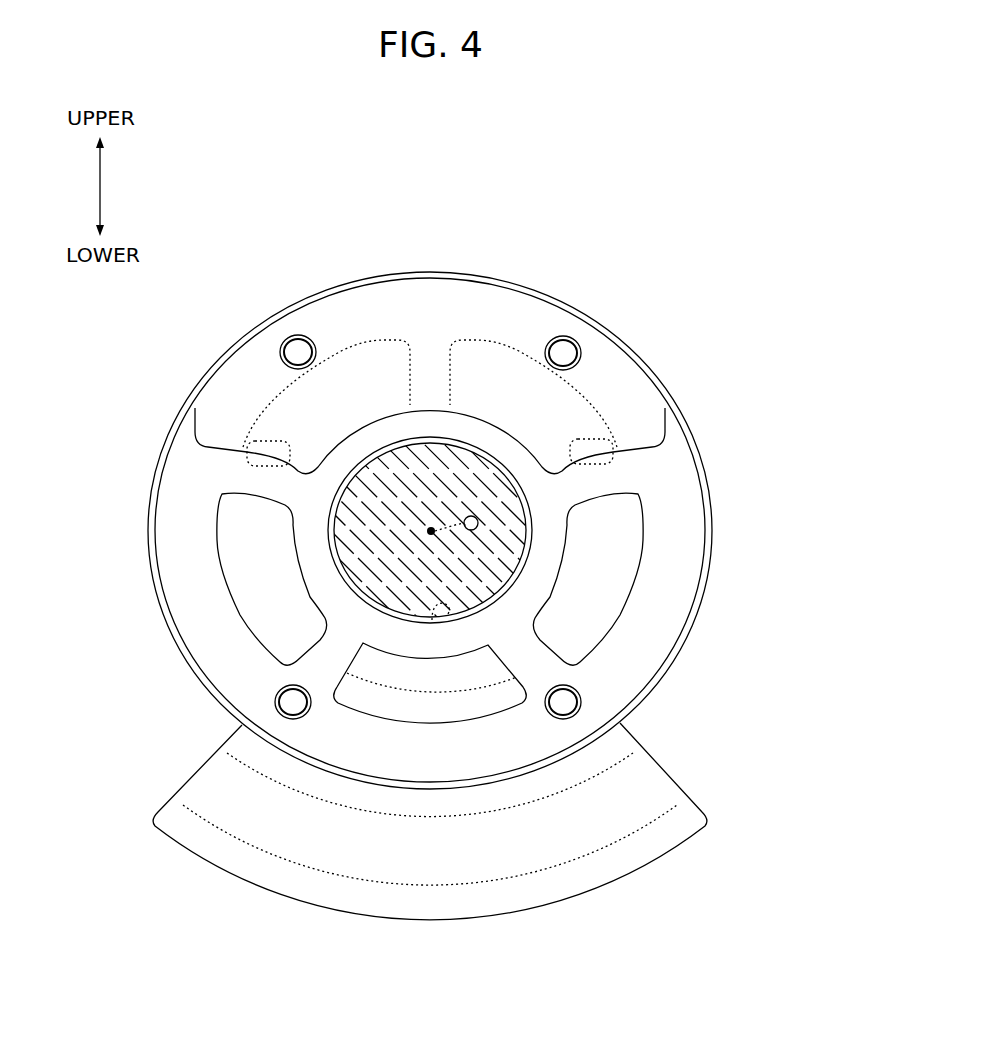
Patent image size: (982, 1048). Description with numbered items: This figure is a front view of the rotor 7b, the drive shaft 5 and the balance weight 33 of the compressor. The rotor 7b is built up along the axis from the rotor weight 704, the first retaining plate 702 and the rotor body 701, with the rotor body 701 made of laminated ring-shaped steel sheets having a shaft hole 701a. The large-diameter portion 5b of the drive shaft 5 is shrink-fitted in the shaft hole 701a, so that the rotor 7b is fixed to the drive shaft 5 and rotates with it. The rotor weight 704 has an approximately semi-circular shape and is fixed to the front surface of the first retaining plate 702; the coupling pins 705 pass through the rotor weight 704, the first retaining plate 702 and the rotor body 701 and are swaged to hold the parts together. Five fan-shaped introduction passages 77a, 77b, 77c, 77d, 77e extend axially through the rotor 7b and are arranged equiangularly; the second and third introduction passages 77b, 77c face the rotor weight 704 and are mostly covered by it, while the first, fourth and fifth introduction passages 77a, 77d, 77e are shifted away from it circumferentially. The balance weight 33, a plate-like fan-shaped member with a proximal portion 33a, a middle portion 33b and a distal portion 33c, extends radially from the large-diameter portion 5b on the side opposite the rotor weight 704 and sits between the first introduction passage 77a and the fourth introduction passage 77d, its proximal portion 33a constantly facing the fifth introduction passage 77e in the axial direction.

The drive shaft 5 is at (397, 438).
The large-diameter portion 5b is at (362, 545).
The rotor 7b is at (462, 258).
The rotor body 701 is at (193, 410).
The shaft hole 701a is at (443, 608).
The first retaining plate 702 is at (700, 537).
The rotor weight 704 is at (628, 382).
The coupling pins 705 is at (566, 346).
The first introduction passage 77a is at (257, 613).
The second introduction passage 77b is at (247, 453).
The third introduction passage 77c is at (622, 438).
The fourth introduction passage 77d is at (617, 590).
The fifth introduction passage 77e is at (442, 712).
The balance weight 33 is at (238, 889).
The proximal portion 33a is at (360, 693).
The middle portion 33b is at (617, 752).
The distal portion 33c is at (628, 862).